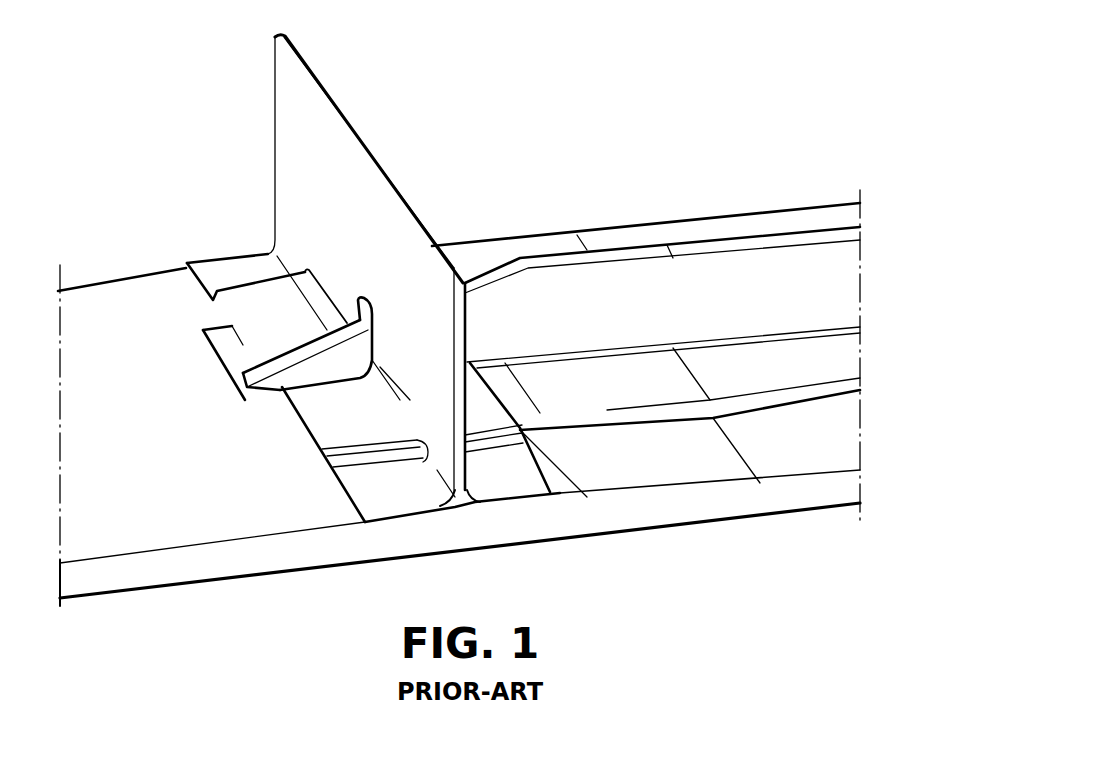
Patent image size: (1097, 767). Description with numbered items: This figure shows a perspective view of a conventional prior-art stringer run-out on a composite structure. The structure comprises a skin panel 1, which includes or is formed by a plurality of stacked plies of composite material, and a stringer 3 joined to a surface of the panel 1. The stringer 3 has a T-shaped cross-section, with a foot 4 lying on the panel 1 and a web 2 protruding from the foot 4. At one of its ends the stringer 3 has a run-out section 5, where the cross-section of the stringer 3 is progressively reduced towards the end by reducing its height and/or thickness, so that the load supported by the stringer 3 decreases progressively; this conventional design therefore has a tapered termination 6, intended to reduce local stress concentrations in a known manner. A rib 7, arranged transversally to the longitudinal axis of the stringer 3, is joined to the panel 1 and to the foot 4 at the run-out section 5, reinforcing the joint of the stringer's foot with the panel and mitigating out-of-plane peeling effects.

The skin panel 1 is at (128, 350).
The web 2 is at (752, 247).
The stringer 3 is at (617, 303).
The foot 4 is at (770, 372).
The run-out section 5 is at (507, 297).
The tapered termination 6 is at (308, 353).
The rib 7 is at (317, 160).